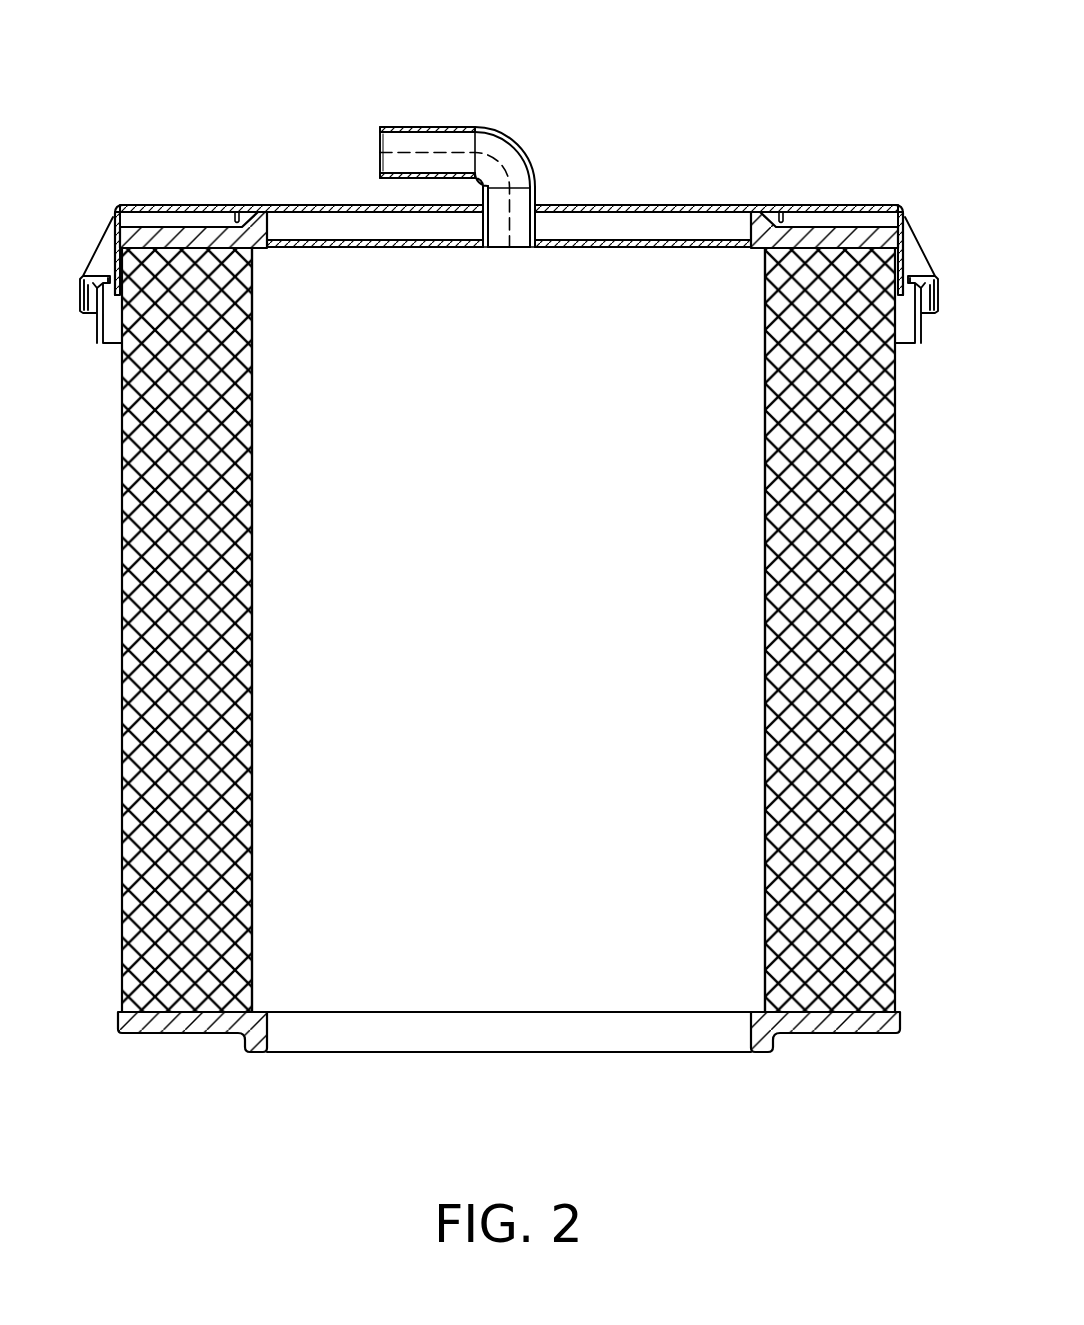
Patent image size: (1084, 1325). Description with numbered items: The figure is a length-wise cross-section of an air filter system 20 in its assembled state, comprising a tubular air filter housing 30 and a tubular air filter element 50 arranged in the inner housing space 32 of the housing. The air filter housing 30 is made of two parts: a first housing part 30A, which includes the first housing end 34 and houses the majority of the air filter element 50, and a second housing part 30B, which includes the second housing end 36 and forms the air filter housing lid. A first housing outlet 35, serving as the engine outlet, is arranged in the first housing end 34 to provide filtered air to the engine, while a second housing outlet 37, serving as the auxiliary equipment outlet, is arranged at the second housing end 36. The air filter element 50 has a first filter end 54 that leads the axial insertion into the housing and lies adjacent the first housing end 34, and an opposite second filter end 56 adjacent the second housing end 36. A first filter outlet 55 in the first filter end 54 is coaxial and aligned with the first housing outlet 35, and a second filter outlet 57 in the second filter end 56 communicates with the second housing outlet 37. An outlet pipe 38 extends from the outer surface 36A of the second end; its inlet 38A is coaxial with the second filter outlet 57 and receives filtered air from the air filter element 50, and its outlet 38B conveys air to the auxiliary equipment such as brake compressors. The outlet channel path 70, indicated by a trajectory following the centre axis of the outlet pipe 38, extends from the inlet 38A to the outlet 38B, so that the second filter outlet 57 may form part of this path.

The air filter system 20 is at (711, 1103).
The air filter housing 30 is at (866, 1054).
The first housing part 30A is at (148, 1055).
The second housing part 30B is at (682, 88).
The inner housing space 32 is at (190, 528).
The first housing end 34 is at (825, 1030).
The first housing outlet 35 is at (466, 1030).
The second housing end 36 is at (274, 204).
The outer surface of the second end 36A is at (540, 203).
The second housing outlet 37 is at (382, 144).
The outlet pipe 38 is at (521, 145).
The inlet of the outlet pipe 38A is at (503, 258).
The outlet of the outlet pipe 38B is at (376, 139).
The air filter element 50 is at (750, 894).
The first filter end 54 is at (194, 1020).
The first filter outlet 55 is at (380, 1012).
The second filter end 56 is at (183, 244).
The second filter outlet 57 is at (525, 246).
The outlet channel path 70 is at (437, 152).